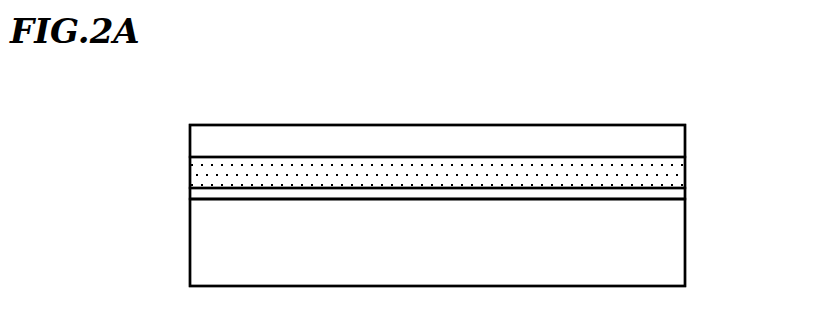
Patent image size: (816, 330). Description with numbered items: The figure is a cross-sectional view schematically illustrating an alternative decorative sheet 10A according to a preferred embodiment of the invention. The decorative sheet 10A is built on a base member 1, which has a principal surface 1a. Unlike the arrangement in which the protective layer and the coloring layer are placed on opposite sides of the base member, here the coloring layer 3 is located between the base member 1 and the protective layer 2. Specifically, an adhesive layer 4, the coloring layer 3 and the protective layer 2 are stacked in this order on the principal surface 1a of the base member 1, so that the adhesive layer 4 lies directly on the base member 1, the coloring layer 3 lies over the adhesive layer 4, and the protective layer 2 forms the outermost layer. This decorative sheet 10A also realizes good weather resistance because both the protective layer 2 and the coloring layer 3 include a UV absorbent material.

The decorative sheet 10A is at (656, 94).
The base member 1 is at (670, 245).
The principal surface 1a is at (372, 199).
The protective layer 2 is at (200, 142).
The coloring layer 3 is at (197, 172).
The adhesive layer 4 is at (195, 193).